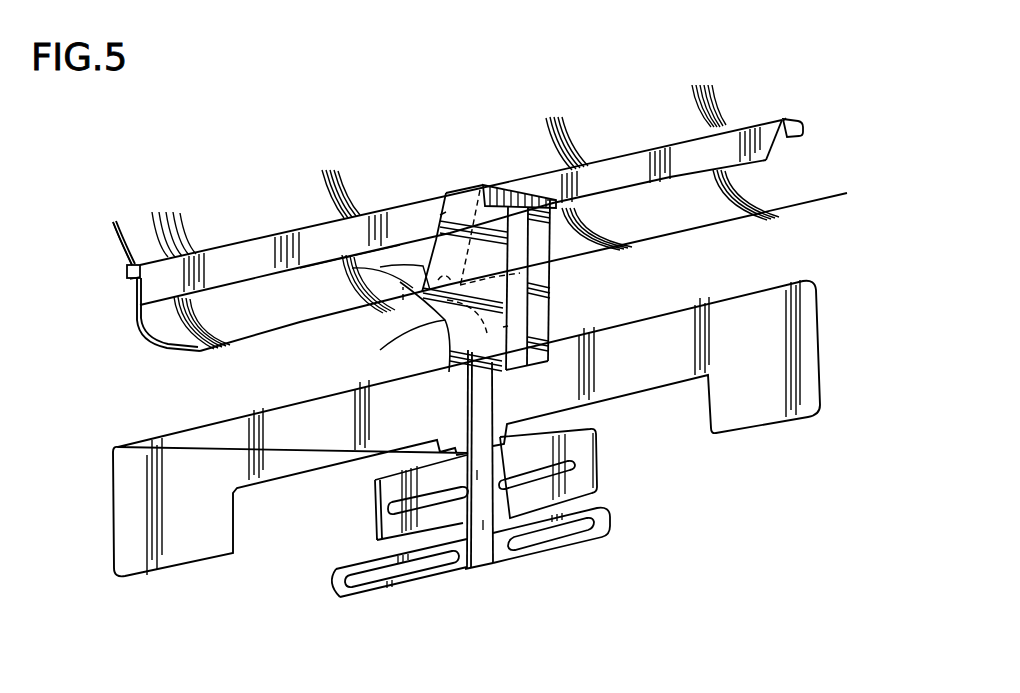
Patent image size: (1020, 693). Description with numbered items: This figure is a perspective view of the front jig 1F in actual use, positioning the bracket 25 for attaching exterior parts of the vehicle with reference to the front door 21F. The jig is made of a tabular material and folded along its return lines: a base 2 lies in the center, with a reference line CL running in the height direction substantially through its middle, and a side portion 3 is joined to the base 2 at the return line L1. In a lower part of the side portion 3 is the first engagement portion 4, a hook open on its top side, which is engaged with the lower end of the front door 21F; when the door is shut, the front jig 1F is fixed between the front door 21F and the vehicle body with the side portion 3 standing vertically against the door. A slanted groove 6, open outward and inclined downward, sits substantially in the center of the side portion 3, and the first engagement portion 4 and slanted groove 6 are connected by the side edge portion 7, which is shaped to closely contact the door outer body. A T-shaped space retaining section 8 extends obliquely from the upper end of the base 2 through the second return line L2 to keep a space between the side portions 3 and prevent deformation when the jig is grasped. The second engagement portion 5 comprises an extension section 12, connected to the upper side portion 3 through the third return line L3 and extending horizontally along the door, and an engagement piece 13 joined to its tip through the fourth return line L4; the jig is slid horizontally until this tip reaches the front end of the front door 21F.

The front jig 1F is at (231, 220).
The base 2 is at (548, 320).
The side portion 3 is at (440, 328).
The first engagement portion 4 is at (403, 287).
The second engagement portion 5 is at (136, 314).
The slanted groove 6 is at (390, 250).
The side edge portion 7 is at (348, 277).
The space retaining section 8 is at (480, 190).
The extension section 12 is at (223, 270).
The engagement piece 13 is at (127, 270).
The front door 21F is at (727, 223).
The bracket 25 is at (752, 370).
The reference line CL is at (548, 360).
The return line L1 is at (503, 327).
The second return line L2 is at (547, 200).
The third return line L3 is at (440, 215).
The fourth return line L4 is at (130, 280).